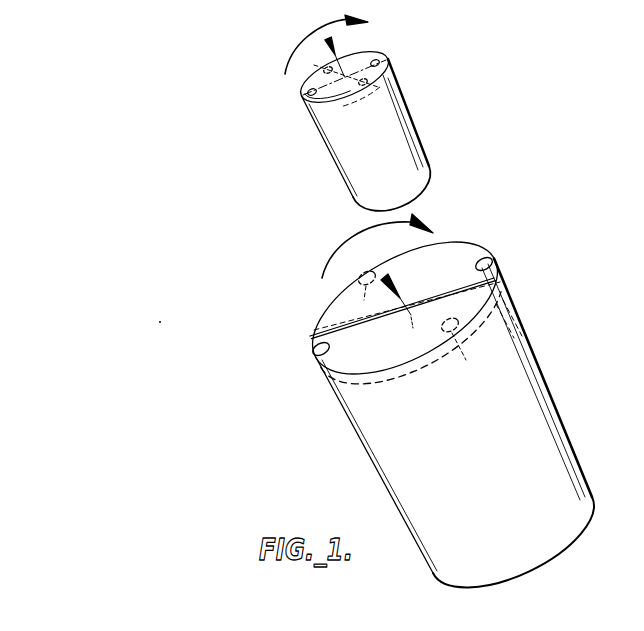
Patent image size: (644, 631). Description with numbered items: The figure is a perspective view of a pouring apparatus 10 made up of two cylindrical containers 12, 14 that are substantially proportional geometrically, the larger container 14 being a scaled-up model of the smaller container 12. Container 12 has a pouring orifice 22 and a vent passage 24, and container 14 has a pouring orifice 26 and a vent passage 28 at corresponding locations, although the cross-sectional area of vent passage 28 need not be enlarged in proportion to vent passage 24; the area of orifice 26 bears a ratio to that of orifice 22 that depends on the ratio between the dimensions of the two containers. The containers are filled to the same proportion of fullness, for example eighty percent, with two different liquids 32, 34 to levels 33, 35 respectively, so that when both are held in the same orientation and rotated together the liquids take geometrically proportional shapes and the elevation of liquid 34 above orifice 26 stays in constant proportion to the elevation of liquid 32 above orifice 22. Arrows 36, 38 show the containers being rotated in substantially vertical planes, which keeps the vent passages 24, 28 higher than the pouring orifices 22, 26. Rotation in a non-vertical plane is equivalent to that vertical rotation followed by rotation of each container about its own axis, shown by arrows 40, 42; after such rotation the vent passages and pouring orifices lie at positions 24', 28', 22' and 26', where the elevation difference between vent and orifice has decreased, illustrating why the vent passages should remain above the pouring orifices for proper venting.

The pouring apparatus 10 is at (74, 261).
The container 12 is at (410, 133).
The container 14 is at (548, 416).
The pouring orifice 22 is at (287, 94).
The rotated position of pouring orifice 22' is at (312, 60).
The vent passage 24 is at (397, 49).
The rotated position of vent passage 24' is at (401, 72).
The pouring orifice 26 is at (298, 350).
The rotated position of pouring orifice 26' is at (387, 262).
The vent passage 28 is at (507, 253).
The rotated position of vent passage 28' is at (507, 337).
The liquid 32 is at (384, 161).
The level 33 is at (316, 123).
The liquid 34 is at (483, 457).
The level 35 is at (540, 362).
The arrow 36 is at (333, 44).
The arrow 38 is at (394, 280).
The arrow 40 is at (305, 32).
The arrow 42 is at (346, 240).